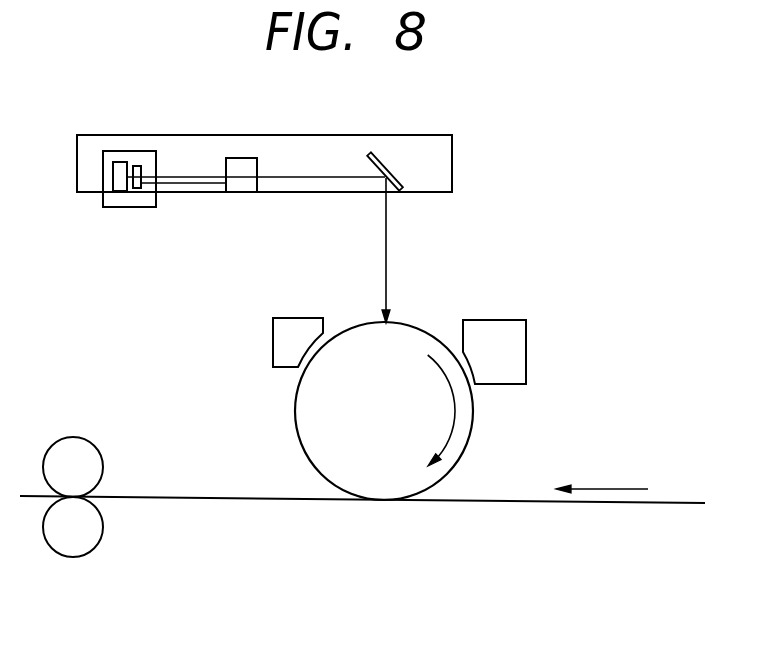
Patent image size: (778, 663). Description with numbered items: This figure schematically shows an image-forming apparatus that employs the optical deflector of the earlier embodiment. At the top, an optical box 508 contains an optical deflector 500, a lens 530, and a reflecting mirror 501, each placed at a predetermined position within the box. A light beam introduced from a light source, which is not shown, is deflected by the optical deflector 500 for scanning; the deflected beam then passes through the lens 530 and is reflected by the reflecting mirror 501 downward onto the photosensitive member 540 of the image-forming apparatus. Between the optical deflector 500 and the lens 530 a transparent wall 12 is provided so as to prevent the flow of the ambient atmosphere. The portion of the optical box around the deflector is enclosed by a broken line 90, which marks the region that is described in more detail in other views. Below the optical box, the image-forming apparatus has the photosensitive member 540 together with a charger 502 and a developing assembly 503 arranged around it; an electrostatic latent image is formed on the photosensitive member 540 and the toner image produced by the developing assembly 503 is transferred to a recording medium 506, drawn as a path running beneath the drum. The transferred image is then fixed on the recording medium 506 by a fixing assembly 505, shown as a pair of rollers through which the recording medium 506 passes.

The optical box 508 is at (238, 135).
The broken line 90 is at (118, 207).
The optical deflector 500 is at (120, 162).
The transparent wall 12 is at (138, 166).
The lens 530 is at (241, 187).
The reflecting mirror 501 is at (377, 154).
The photosensitive member 540 is at (296, 420).
The charger 502 is at (273, 333).
The developing assembly 503 is at (526, 340).
The recording medium 506 is at (270, 501).
The fixing assembly 505 is at (80, 437).